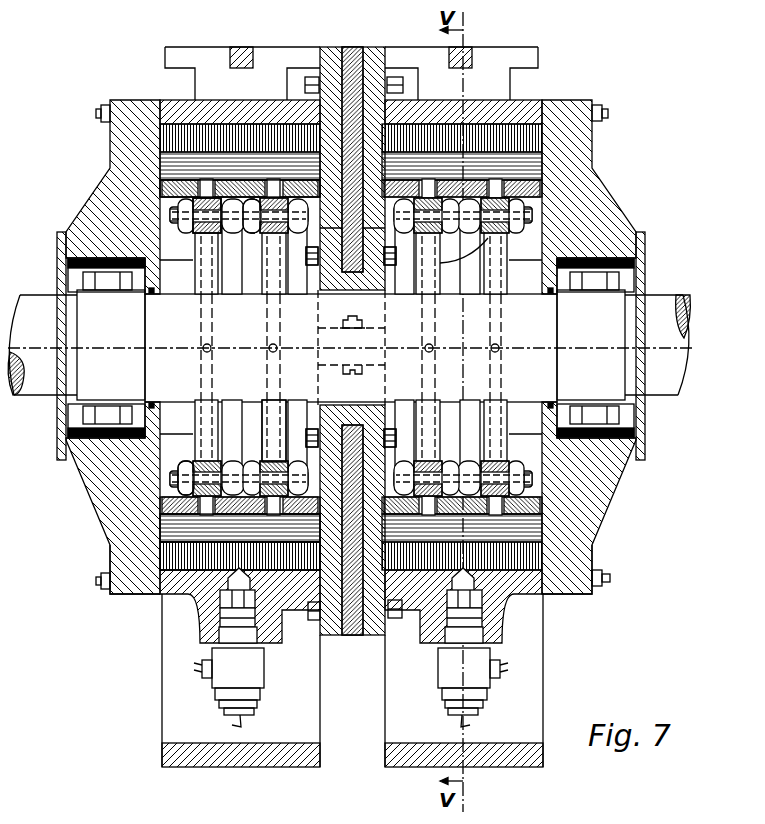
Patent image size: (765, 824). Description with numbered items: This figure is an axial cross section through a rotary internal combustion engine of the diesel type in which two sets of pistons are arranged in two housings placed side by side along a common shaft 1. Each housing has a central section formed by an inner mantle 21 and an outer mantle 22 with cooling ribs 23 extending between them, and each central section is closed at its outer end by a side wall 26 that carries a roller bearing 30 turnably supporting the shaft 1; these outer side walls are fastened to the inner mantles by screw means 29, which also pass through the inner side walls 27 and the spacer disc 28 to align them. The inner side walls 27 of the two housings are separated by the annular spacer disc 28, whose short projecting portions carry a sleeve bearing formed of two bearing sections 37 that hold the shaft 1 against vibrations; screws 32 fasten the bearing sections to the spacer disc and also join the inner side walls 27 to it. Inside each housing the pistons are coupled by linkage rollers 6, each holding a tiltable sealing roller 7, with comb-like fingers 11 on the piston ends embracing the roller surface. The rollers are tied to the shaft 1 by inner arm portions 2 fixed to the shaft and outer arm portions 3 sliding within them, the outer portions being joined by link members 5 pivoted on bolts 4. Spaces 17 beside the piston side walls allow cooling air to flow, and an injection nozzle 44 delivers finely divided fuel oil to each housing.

The shaft 1 is at (658, 388).
The inner arm portion 2 is at (263, 434).
The outer arm portion 3 is at (197, 232).
The bolt 4 is at (176, 481).
The link member 5 is at (249, 226).
The linkage roller 6 is at (162, 526).
The sealing roller 7 is at (172, 551).
The fingers 11 is at (178, 183).
The spaces 17 is at (164, 228).
The inner mantle 21 is at (174, 104).
The outer mantle 22 is at (176, 755).
The cooling ribs 23 is at (162, 677).
The side wall 26 is at (137, 594).
The inner side wall 27 is at (327, 636).
The spacer disc 28 is at (351, 58).
The screw means 29 is at (101, 583).
The roller bearing 30 is at (592, 290).
The screws 32 is at (394, 258).
The sleeve bearing sections 37 is at (382, 283).
The injection nozzle 44 is at (260, 698).